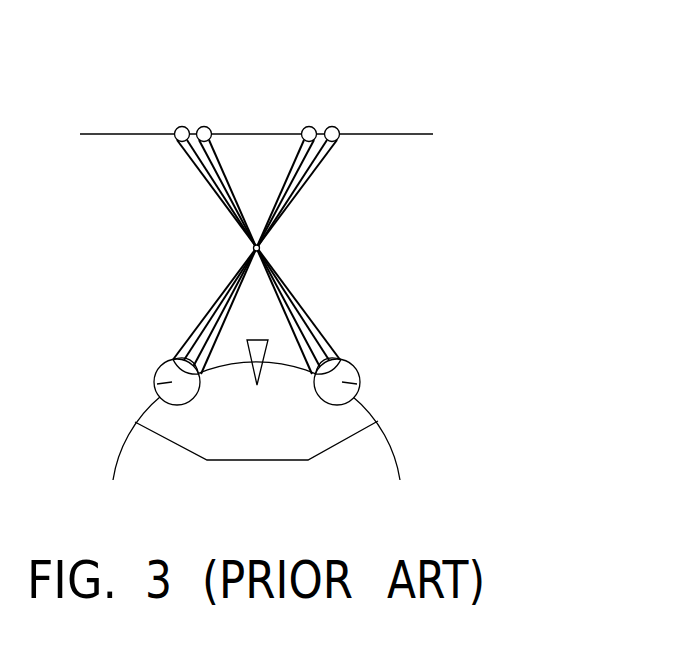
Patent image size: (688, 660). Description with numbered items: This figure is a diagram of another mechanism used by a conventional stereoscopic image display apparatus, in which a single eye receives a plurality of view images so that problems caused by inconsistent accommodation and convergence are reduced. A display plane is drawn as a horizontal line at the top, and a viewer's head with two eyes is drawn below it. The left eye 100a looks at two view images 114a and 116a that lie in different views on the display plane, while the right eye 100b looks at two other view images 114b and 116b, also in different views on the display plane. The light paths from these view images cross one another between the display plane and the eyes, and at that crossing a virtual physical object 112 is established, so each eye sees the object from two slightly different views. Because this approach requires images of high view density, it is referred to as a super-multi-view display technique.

The left eye 100a is at (155, 378).
The right eye 100b is at (357, 377).
The virtual physical object 112 is at (260, 250).
The view image 114a is at (308, 127).
The view image 114b is at (201, 127).
The view image 116a is at (336, 127).
The view image 116b is at (178, 127).